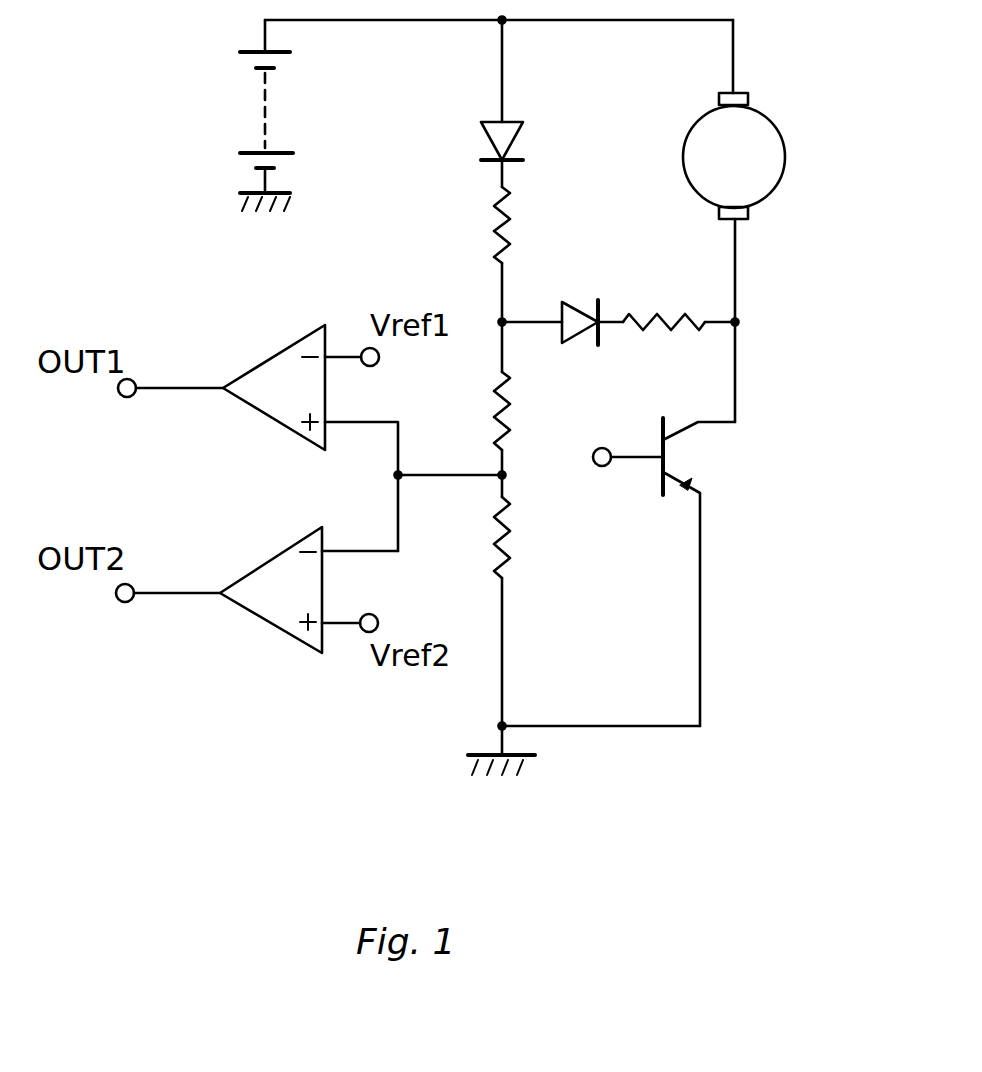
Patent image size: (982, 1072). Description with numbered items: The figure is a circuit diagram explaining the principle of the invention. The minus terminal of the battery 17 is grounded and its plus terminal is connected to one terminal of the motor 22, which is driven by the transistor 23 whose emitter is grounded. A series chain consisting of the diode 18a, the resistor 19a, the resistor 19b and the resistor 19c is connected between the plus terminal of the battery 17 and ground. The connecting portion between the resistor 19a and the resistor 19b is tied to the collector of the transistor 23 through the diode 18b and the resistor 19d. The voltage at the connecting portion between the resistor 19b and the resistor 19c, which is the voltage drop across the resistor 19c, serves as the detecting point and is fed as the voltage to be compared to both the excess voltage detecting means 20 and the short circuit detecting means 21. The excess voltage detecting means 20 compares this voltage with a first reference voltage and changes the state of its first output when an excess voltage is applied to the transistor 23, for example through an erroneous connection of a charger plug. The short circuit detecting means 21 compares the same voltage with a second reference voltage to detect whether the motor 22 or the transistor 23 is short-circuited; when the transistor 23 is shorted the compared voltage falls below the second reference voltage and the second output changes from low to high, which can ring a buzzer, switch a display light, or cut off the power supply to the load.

The battery 17 is at (273, 106).
The diode 18a is at (524, 132).
The diode 18b is at (579, 304).
The resistor 19a is at (513, 226).
The resistor 19b is at (513, 419).
The resistor 19c is at (513, 544).
The resistor 19d is at (661, 315).
The excess voltage detecting means 20 is at (277, 375).
The short circuit detecting means 21 is at (272, 572).
The motor 22 is at (774, 146).
The transistor 23 is at (688, 432).